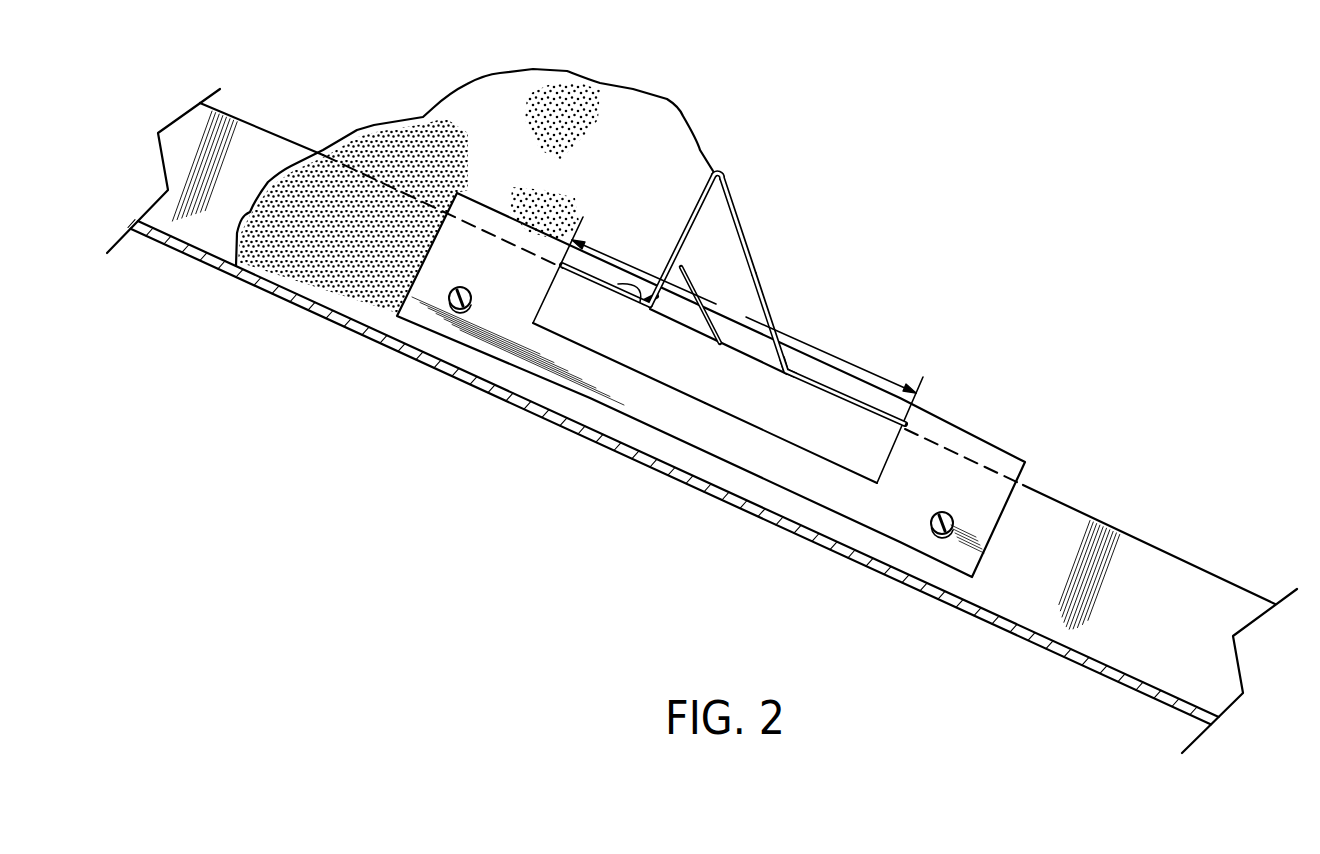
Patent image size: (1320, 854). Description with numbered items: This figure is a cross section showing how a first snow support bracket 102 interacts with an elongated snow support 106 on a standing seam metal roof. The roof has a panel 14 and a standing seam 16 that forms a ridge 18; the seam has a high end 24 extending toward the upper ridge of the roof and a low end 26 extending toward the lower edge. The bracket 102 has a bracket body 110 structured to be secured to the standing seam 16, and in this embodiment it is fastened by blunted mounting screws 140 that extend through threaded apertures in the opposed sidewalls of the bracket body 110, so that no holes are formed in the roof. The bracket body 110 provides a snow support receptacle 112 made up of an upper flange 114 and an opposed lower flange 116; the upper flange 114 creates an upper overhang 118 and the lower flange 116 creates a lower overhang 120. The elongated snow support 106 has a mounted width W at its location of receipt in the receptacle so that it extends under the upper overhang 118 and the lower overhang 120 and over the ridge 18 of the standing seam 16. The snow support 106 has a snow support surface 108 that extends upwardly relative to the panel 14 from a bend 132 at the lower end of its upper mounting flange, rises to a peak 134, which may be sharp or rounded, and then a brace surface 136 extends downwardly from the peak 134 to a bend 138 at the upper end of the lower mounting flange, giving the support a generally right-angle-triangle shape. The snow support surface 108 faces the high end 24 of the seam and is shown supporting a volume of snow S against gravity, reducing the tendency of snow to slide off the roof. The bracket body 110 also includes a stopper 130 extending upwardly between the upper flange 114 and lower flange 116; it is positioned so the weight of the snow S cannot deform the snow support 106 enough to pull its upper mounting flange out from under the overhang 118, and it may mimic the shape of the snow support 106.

The panel 14 is at (347, 320).
The standing seam 16 is at (1088, 514).
The ridge 18 is at (282, 137).
The high end 24 is at (200, 112).
The low end 26 is at (1207, 646).
The first snow support bracket 102 is at (763, 362).
The elongated snow support 106 is at (696, 340).
The snow support surface 108 is at (687, 230).
The bracket body 110 is at (957, 415).
The snow support receptacle 112 is at (728, 187).
The upper flange 114 is at (562, 270).
The lower flange 116 is at (861, 405).
The upper overhang 118 is at (643, 291).
The lower overhang 120 is at (862, 413).
The stopper 130 is at (705, 245).
The bend 132 is at (655, 312).
The peak 134 is at (717, 172).
The brace surface 136 is at (710, 268).
The bend 138 is at (786, 377).
The blunted mounting screws 140 is at (432, 298).
The snow S is at (428, 120).
The mounted width W is at (744, 316).